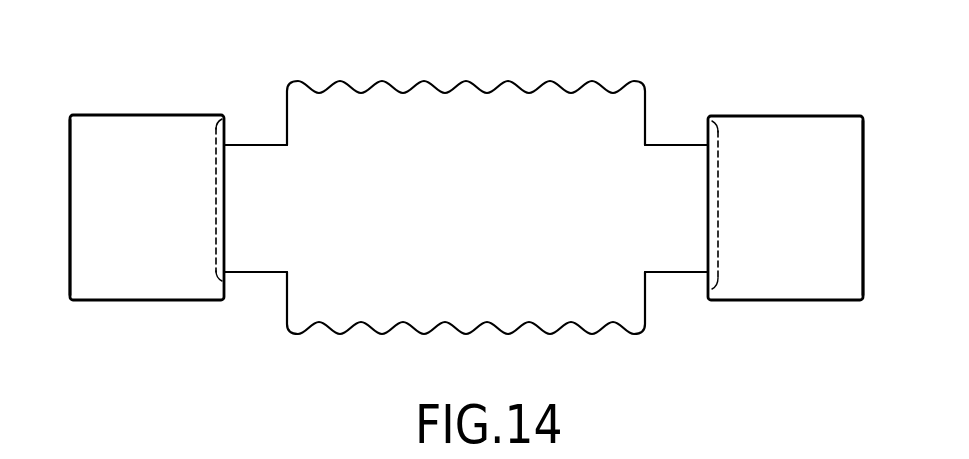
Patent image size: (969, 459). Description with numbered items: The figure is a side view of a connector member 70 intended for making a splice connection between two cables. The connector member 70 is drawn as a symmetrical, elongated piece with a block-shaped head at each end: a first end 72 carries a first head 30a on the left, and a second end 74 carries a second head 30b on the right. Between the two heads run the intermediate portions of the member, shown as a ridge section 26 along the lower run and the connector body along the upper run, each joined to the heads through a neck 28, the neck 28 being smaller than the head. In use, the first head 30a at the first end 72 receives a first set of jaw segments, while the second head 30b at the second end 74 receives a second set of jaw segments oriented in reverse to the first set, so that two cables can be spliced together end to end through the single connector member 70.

The ridge section 26 is at (465, 335).
The neck 28 is at (675, 150).
The first head 30a is at (103, 294).
The second head 30b is at (853, 123).
The connector member 70 is at (467, 88).
The first end 72 is at (71, 116).
The second end 74 is at (864, 282).